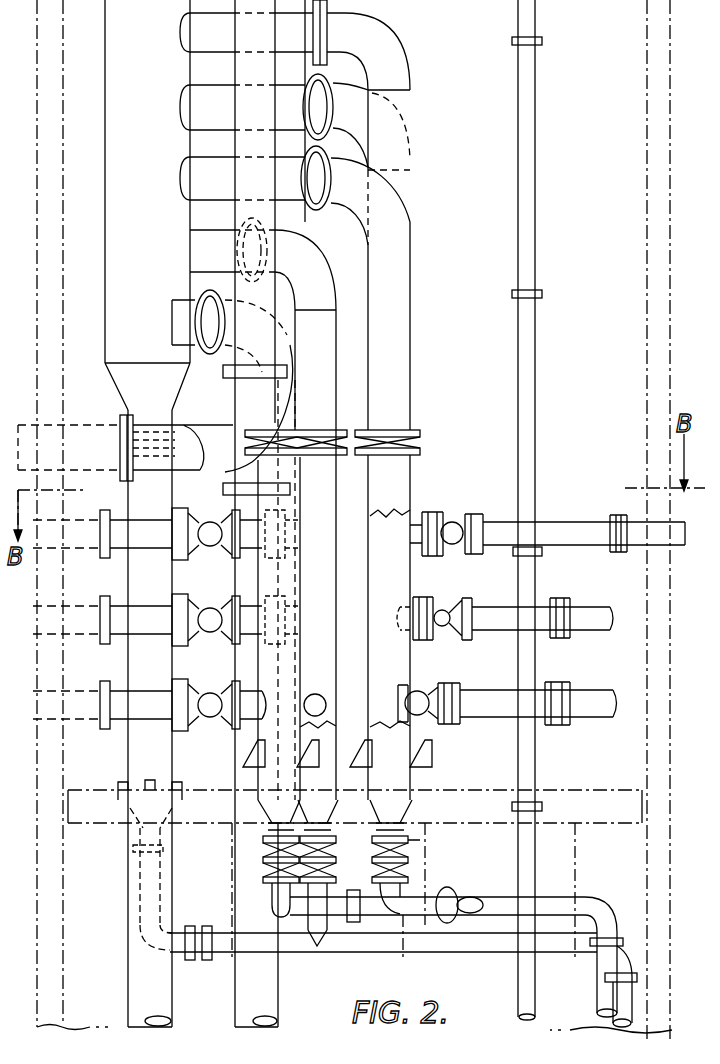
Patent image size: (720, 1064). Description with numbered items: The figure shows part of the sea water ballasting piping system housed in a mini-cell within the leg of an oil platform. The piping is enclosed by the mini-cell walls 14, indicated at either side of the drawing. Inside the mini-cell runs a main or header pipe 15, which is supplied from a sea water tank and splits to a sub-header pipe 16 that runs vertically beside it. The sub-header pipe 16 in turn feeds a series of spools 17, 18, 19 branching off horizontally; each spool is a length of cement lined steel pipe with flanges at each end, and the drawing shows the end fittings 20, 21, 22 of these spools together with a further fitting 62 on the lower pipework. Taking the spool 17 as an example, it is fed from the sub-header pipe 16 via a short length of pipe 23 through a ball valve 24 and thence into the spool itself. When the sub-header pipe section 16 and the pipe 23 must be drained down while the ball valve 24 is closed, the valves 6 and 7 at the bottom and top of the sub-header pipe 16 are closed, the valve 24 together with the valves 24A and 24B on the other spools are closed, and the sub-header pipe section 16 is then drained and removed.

The valve 6 is at (408, 868).
The valve 7 is at (426, 441).
The mini-cell wall 14 is at (63, 68).
The main or header pipe 15 is at (158, 248).
The sub-header pipe 16 is at (400, 579).
The spool 17 is at (562, 530).
The spool 18 is at (505, 612).
The spool 19 is at (503, 690).
The pipe coupling 20 is at (633, 522).
The pipe coupling 21 is at (584, 612).
The pipe coupling 22 is at (585, 701).
The short length of pipe 23 is at (408, 527).
The ball valve 24 is at (453, 544).
The valve 24A is at (442, 628).
The valve 24B is at (427, 712).
The pipe opening 62 is at (306, 712).